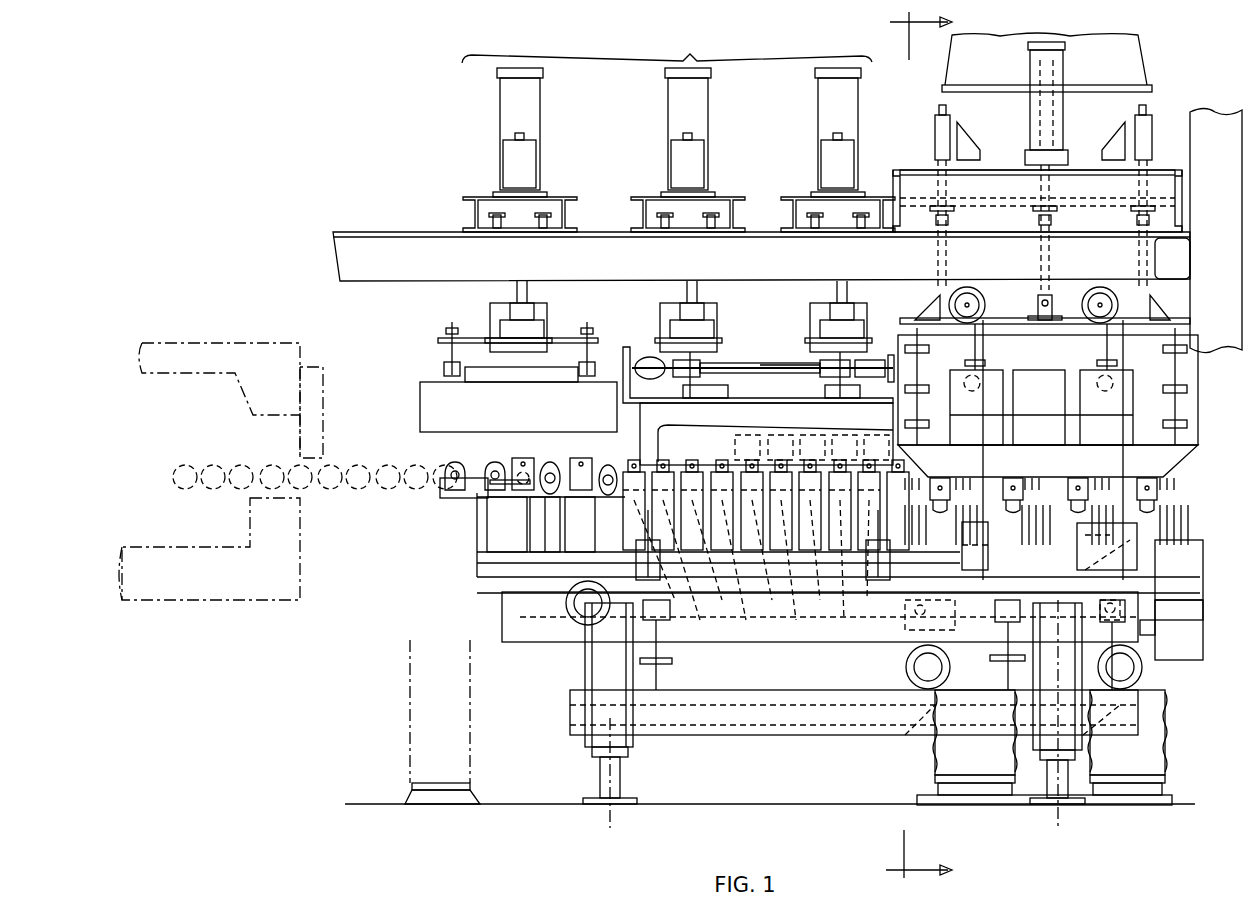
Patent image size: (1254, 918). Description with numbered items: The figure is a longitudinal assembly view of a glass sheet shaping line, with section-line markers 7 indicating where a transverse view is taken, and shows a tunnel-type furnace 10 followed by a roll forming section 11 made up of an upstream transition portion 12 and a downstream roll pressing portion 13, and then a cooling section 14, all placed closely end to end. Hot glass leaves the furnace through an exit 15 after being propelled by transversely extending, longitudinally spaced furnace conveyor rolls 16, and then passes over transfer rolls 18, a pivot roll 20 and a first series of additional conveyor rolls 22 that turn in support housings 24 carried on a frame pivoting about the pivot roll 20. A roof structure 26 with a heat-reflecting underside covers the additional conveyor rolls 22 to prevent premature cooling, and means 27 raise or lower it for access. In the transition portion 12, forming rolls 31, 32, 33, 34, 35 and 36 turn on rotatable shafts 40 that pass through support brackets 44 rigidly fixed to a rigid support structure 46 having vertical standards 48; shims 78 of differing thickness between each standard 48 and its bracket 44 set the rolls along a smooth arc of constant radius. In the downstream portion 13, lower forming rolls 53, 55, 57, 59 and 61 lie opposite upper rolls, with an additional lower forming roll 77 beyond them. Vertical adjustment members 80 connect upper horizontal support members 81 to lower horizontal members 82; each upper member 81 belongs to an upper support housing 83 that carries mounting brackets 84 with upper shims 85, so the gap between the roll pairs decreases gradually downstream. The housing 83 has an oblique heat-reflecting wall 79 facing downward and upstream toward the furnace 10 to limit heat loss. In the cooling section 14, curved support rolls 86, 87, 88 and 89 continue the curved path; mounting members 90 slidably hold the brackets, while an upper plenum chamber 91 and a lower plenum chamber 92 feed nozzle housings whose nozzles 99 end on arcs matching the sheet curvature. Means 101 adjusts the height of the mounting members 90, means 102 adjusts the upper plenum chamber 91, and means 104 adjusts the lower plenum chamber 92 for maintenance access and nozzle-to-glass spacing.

The section line 7- 7 is at (914, 447).
The tunnel-type furnace 10 is at (268, 796).
The roll forming section 11 is at (678, 130).
The transition portion 12 is at (495, 808).
The roll pressing portion 13 is at (668, 808).
The cooling section 14 is at (1043, 810).
The furnace exit 15 is at (335, 460).
The furnace conveyor rolls 16 is at (188, 490).
The transfer rolls 18 is at (358, 490).
The pivot roll 20 is at (478, 497).
The additional conveyor rolls 22 is at (544, 524).
The support housings 24 is at (490, 462).
The roof structure 26 is at (420, 400).
The means to raise or lower the roof structure 27 is at (452, 340).
The forming roll 31 is at (507, 524).
The forming roll 32 is at (548, 524).
The forming roll 33 is at (664, 595).
The forming roll 34 is at (690, 570).
The forming roll 35 is at (716, 560).
The forming roll 36 is at (743, 570).
The rotatable shafts 40 is at (523, 460).
The support bracket 44 is at (515, 462).
The rigid support structure 46 is at (477, 570).
The vertical standards 48 is at (750, 548).
The lower forming roll 53 is at (771, 560).
The lower forming roll 55 is at (798, 570).
The lower forming roll 57 is at (825, 560).
The lower forming roll 59 is at (850, 570).
The lower forming roll 61 is at (873, 560).
The additional lower forming roll 77 is at (925, 470).
The shims 78 is at (800, 360).
The heat-reflecting wall 79 is at (763, 400).
The vertical adjustment members 80 is at (636, 560).
The upper horizontal support members 81 is at (640, 450).
The lower horizontal members 82 is at (575, 585).
The upper support housing 83 is at (765, 360).
The mounting brackets 84 is at (738, 430).
The upper shims 85 is at (810, 432).
The curved support roll 86 is at (945, 510).
The curved support roll 87 is at (1013, 512).
The curved support roll 88 is at (1078, 512).
The curved support roll 89 is at (1147, 512).
The mounting members 90 is at (1078, 478).
The upper plenum chamber 91 is at (1026, 474).
The lower plenum chamber 92 is at (1180, 650).
The nozzles 99 is at (1190, 500).
The means for supporting and adjusting the mounting members 101 is at (1190, 392).
The means to support and adjust the upper plenum chamber 102 is at (985, 320).
The support and adjustment means for the lower plenum chamber 104 is at (1100, 652).